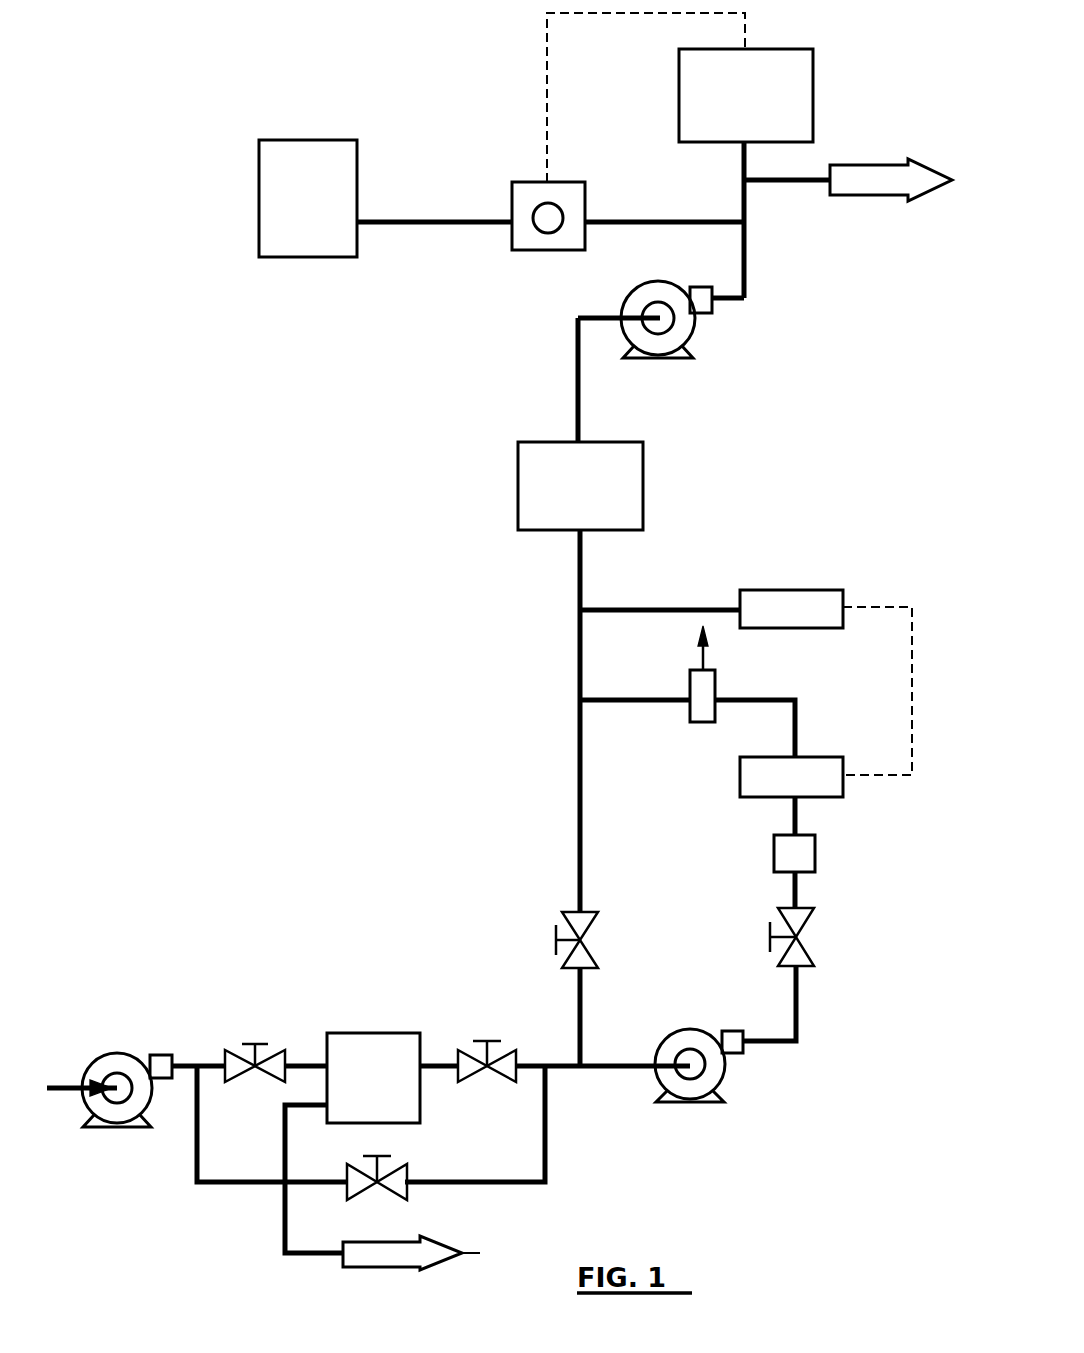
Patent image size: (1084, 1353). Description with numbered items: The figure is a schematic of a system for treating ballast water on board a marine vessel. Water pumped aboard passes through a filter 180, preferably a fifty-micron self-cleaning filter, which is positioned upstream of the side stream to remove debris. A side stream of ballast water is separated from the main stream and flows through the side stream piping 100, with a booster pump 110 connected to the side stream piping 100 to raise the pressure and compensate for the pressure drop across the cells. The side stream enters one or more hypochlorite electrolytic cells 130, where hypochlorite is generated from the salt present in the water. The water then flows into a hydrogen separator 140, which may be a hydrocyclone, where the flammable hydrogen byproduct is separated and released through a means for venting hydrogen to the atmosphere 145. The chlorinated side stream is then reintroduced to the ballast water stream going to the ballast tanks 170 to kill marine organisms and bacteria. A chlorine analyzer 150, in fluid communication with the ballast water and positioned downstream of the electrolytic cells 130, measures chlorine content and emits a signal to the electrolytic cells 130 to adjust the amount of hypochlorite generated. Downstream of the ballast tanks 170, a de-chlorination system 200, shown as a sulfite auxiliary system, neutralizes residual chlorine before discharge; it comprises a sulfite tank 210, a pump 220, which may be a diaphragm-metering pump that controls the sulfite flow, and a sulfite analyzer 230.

The side stream piping 100 is at (622, 1066).
The booster pump 110 is at (700, 1102).
The hypochlorite electrolytic cells 130 is at (740, 775).
The hydrogen separator 140 is at (717, 680).
The means for venting hydrogen to the atmosphere 145 is at (707, 653).
The chlorine analyzer 150 is at (790, 590).
The ballast tanks 170 is at (643, 462).
The filter 180 is at (385, 1033).
The de-chlorination system 200 is at (458, 49).
The sulfite tank 210 is at (292, 140).
The pump 220 is at (575, 182).
The sulfite analyzer 230 is at (775, 49).